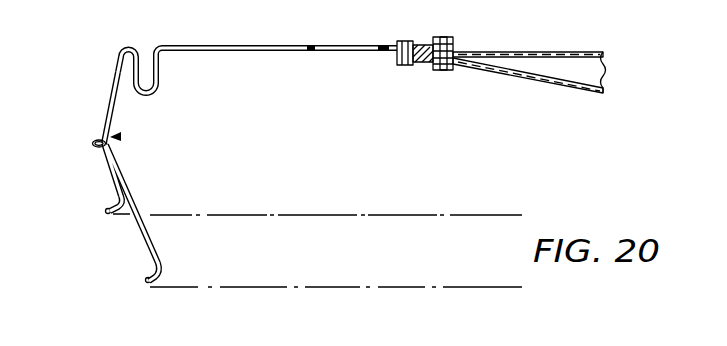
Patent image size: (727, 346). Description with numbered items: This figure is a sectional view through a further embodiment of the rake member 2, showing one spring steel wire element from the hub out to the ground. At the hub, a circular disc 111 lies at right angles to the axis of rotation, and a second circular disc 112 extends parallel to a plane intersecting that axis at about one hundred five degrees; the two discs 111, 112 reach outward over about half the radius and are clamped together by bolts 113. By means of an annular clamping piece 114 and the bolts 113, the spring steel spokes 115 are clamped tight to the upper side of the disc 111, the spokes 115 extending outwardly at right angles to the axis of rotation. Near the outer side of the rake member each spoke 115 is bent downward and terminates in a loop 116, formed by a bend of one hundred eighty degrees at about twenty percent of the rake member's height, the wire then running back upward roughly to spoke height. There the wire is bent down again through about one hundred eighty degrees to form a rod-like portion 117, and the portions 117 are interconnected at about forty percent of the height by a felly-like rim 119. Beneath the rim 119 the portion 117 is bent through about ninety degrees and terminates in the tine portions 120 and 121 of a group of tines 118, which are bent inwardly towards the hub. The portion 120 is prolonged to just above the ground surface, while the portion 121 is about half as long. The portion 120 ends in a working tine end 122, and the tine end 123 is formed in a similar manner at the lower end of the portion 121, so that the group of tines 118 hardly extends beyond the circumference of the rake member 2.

The rake member 2 is at (209, 310).
The circular disc 111 is at (569, 52).
The circular disc 112 is at (583, 89).
The bolts 113 is at (447, 37).
The annular clamping piece 114 is at (411, 41).
The spring steel spokes 115 is at (333, 54).
The loop 116 is at (146, 82).
The rod-like portion 117 is at (118, 59).
The group of tines 118 is at (103, 109).
The felly-like rim 119 is at (92, 143).
The tine portion 120 is at (146, 244).
The tine portion 121 is at (110, 165).
The working tine end 122 is at (143, 279).
The tine end 123 is at (104, 210).